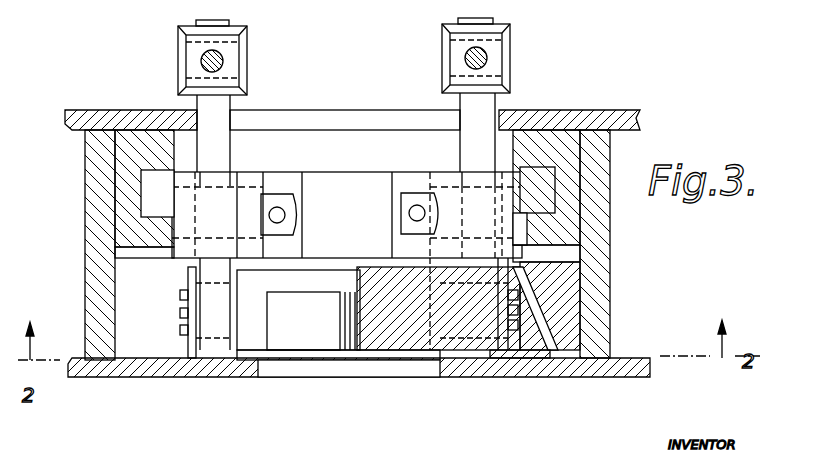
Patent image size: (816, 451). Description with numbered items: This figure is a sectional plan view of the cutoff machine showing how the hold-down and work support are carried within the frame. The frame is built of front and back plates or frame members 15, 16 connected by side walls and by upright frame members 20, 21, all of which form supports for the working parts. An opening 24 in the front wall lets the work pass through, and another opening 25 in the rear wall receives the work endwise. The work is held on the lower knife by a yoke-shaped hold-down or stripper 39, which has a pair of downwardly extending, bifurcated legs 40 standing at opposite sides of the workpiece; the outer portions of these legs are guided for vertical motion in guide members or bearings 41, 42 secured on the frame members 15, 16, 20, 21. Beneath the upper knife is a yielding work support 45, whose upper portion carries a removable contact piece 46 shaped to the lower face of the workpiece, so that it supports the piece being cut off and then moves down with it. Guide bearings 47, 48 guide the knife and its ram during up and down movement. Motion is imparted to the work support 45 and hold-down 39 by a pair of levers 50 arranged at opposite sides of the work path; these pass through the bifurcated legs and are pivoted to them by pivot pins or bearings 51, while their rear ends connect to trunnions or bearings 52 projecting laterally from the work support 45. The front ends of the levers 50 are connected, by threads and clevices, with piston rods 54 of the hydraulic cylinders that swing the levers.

The frame plate 15 is at (92, 380).
The frame plate 16 is at (86, 112).
The upright frame member 20 is at (88, 285).
The upright frame member 21 is at (607, 236).
The opening 24 is at (270, 377).
The opening 25 is at (348, 112).
The hold-down 39 is at (345, 185).
The bifurcated legs 40 is at (178, 260).
The guide member 41 is at (565, 150).
The guide member 42 is at (132, 158).
The work support 45 is at (250, 312).
The contact piece 46 is at (322, 345).
The guide bearing 47 is at (568, 295).
The guide bearing 48 is at (527, 331).
The levers 50 is at (233, 150).
The pivot pins 51 is at (190, 190).
The trunnions 52 is at (217, 360).
The piston rods 54 is at (232, 54).